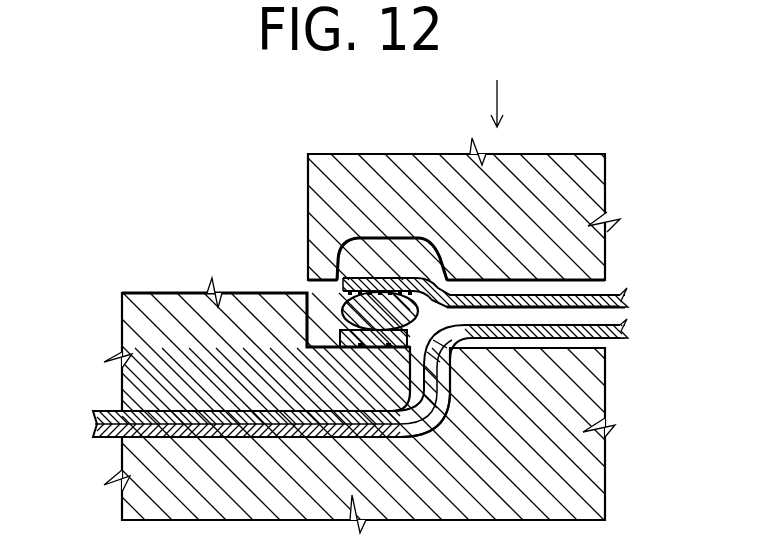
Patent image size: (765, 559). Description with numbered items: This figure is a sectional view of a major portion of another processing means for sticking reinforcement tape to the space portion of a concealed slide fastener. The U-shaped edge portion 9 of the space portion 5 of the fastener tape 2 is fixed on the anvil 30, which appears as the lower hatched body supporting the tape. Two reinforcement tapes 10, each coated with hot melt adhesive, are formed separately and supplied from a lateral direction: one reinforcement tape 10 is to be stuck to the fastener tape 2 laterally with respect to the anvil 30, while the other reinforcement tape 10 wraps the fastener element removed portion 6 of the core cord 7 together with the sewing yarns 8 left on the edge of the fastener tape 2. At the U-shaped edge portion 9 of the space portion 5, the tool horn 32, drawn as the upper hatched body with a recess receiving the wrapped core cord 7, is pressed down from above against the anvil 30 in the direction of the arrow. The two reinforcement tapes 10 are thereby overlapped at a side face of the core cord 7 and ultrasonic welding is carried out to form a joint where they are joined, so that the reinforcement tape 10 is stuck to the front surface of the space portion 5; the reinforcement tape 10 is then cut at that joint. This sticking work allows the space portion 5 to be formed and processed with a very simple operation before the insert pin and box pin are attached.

The fastener tape 2 is at (100, 410).
The space portion 5 is at (270, 408).
The fastener element removed portion 6 is at (340, 330).
The core cord 7 is at (370, 298).
The sewing yarns 8 is at (386, 290).
The U-shaped edge portion 9 is at (446, 368).
The reinforcement tape 10 is at (607, 290).
The anvil 30 is at (172, 332).
The tool horn 32 is at (557, 184).